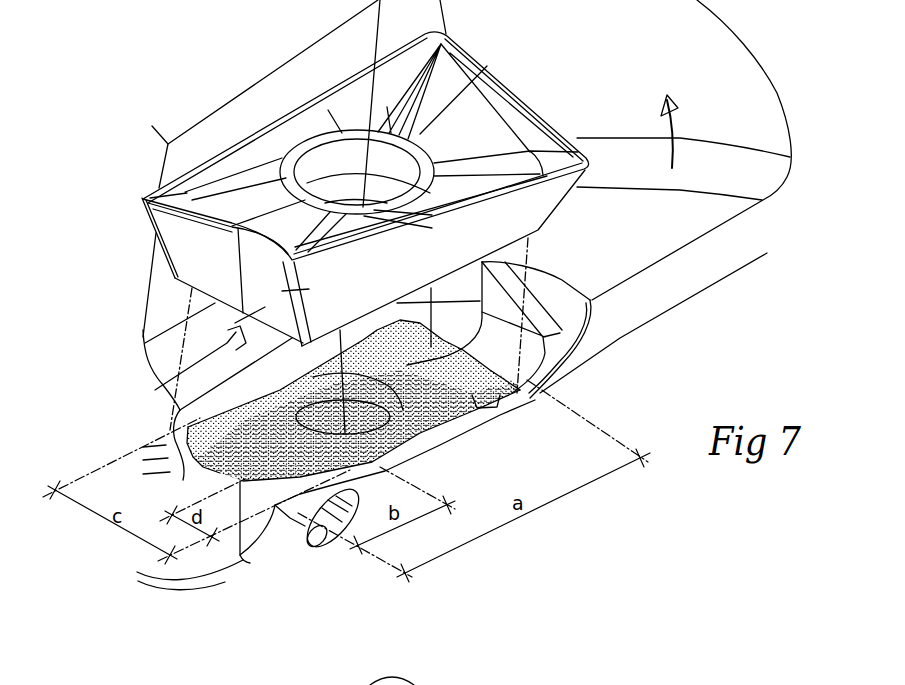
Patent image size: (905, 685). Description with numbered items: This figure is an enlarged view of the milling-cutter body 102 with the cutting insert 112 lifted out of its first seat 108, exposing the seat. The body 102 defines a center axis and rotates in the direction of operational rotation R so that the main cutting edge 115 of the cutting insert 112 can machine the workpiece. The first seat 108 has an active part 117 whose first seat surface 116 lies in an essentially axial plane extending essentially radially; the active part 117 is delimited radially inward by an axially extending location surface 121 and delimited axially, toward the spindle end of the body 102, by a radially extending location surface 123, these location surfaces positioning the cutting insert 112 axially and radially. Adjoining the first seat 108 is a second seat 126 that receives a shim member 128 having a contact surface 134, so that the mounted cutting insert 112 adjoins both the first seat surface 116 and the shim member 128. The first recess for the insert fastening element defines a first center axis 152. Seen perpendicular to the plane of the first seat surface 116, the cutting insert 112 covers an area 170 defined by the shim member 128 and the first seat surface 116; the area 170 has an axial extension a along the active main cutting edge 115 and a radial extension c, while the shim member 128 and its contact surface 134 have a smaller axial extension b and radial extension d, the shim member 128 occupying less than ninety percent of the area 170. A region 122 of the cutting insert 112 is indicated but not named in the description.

The body 102 is at (700, 268).
The cutting insert 112 is at (530, 93).
The main cutting edge 115 is at (386, 238).
The first seat surface 116 is at (431, 413).
The active part 117 is at (620, 399).
The first seat 108 is at (586, 355).
The axially extending location surface 121 is at (203, 387).
The insert rake face 122 is at (468, 117).
The radially extending location surface 123 is at (500, 315).
The second seat 126 is at (243, 560).
The shim member 128 is at (272, 538).
The contact surface 134 is at (325, 482).
The first center axis 152 is at (368, 157).
The area 170 is at (203, 471).